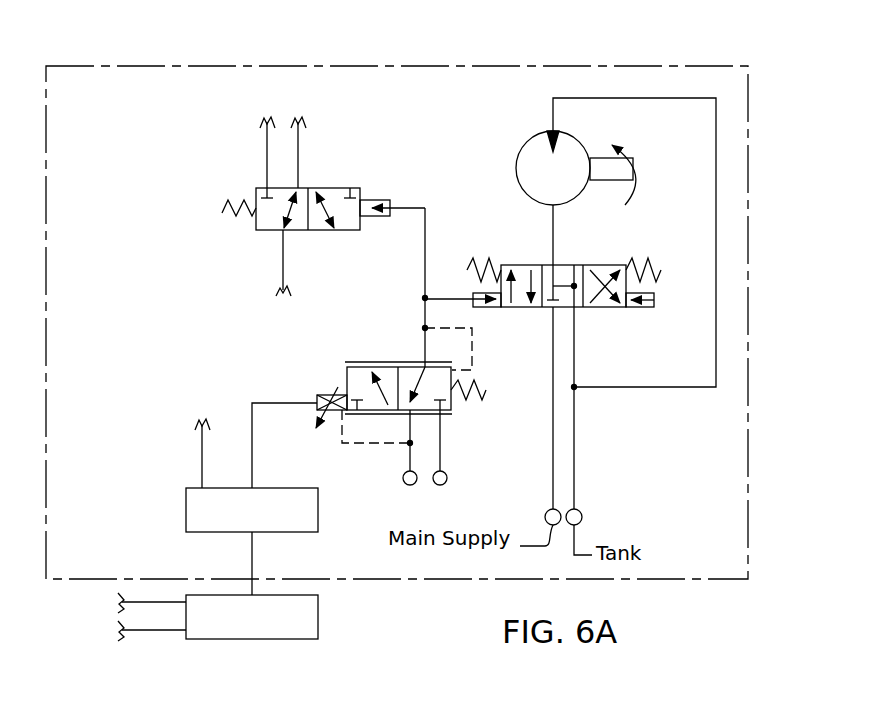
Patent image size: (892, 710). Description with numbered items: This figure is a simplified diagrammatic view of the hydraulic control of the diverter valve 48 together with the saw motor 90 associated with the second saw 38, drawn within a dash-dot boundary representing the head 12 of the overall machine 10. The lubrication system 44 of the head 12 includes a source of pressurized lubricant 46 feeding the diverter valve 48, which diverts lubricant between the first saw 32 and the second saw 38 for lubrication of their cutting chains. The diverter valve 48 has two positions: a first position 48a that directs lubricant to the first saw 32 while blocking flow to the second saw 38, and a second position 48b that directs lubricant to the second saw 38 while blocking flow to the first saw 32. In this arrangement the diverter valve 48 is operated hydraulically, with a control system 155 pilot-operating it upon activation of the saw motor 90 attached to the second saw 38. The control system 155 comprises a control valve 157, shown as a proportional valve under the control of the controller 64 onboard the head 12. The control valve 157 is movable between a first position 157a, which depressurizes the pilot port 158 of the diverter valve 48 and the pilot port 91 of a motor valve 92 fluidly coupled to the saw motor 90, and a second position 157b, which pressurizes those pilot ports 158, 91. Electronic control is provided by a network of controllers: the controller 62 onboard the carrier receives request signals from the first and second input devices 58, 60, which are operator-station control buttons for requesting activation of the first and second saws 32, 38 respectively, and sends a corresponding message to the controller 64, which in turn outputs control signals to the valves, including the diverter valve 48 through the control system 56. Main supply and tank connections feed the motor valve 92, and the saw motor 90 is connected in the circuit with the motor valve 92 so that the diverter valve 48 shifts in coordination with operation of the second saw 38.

The hydraulic system 10 is at (772, 116).
The head 12 is at (553, 66).
The first saw 32 is at (299, 124).
The second saw 38 is at (265, 122).
The lubrication system 44 is at (192, 270).
The source of pressurized lubricant 46 is at (278, 294).
The diverter valve 48 is at (262, 240).
The first position 48a is at (256, 188).
The second position 48b is at (338, 188).
The control system 56 is at (196, 426).
The first input device 58 is at (118, 598).
The second input device 60 is at (118, 628).
The controller 62 is at (320, 612).
The controller 64 is at (318, 505).
The saw motor 90 is at (524, 150).
The pilot port 91 is at (489, 307).
The motor valve 92 is at (560, 265).
The control system 155 is at (212, 390).
The control valve 157 is at (340, 360).
The first position 157a is at (455, 395).
The second position 157b is at (347, 378).
The pilot port 158 is at (378, 200).